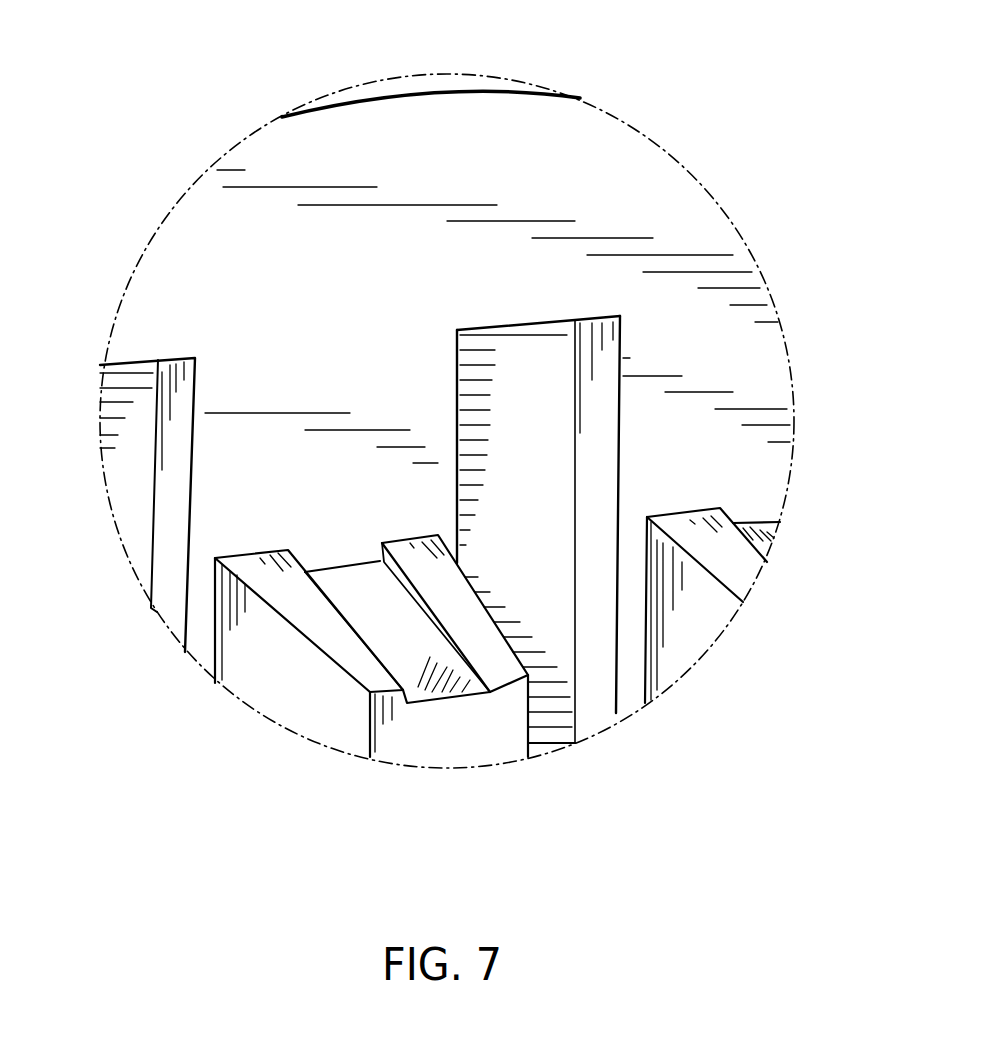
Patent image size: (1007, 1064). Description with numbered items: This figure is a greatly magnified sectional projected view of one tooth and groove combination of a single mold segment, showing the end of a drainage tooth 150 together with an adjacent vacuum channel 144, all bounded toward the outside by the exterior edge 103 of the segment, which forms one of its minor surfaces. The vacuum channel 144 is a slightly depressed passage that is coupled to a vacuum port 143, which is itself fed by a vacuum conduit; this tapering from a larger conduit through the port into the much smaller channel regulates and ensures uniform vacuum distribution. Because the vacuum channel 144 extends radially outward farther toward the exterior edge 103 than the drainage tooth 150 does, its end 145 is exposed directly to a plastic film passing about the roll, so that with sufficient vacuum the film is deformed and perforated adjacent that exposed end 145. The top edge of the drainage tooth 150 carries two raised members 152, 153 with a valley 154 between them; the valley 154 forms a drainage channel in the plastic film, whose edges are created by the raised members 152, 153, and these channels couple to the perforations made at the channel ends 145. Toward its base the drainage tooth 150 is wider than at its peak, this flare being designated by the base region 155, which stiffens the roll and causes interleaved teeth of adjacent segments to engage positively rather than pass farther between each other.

The exterior edge 103 is at (450, 93).
The vacuum port 143 is at (568, 743).
The vacuum channel 144 is at (128, 466).
The end of vacuum channel 145 is at (457, 393).
The drainage tooth 150 is at (344, 718).
The raised member 152 is at (337, 647).
The raised member 153 is at (495, 657).
The valley 154 is at (437, 700).
The base region 155 is at (195, 653).